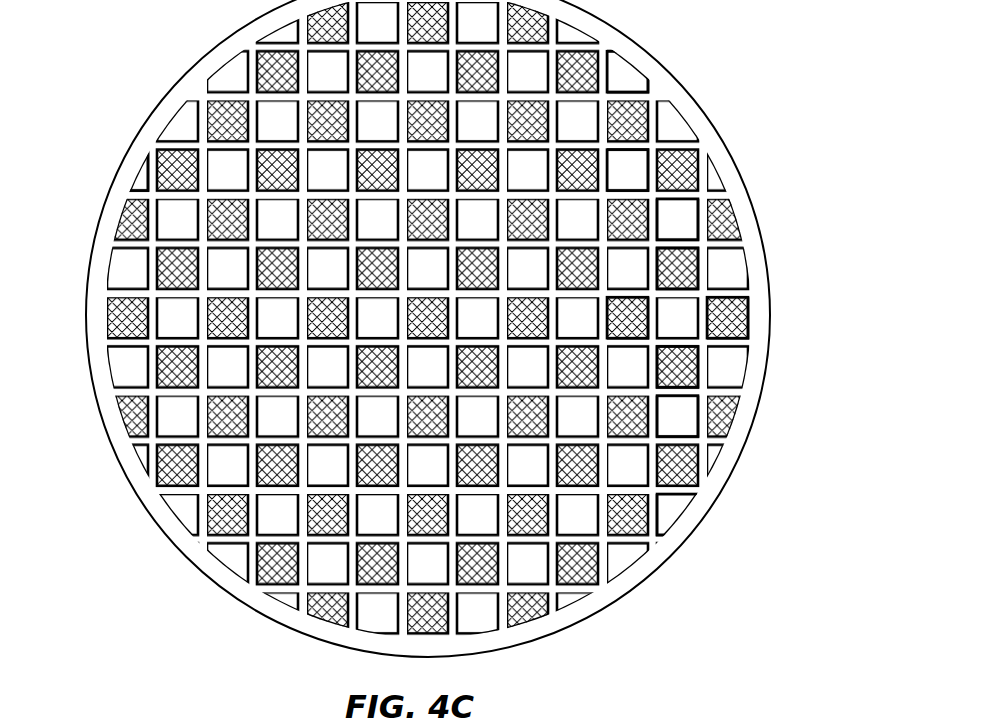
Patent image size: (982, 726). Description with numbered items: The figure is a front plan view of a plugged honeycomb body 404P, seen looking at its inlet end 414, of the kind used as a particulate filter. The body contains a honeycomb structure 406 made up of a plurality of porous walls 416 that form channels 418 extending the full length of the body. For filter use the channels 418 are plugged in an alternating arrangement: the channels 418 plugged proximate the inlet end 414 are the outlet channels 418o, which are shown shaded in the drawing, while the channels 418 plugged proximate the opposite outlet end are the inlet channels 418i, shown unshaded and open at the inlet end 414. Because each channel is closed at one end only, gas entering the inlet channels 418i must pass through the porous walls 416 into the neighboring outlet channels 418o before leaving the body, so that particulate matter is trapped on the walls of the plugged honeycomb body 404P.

The plugged honeycomb body 404P is at (209, 41).
The inlet end 414 is at (629, 68).
The honeycomb structure 406 is at (140, 176).
The inlet channels 418i is at (628, 172).
The outlet channels 418o is at (630, 314).
The walls 416 is at (747, 315).
The channels 418 is at (692, 411).